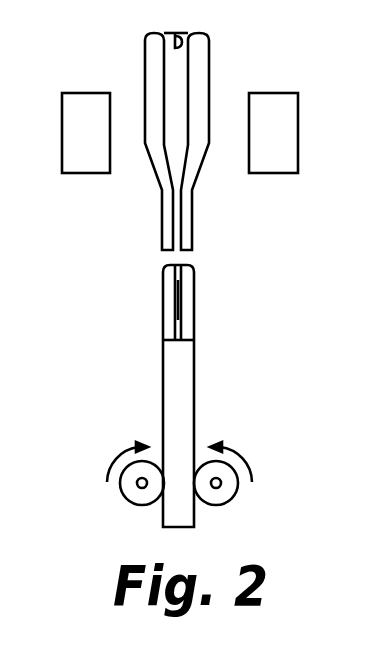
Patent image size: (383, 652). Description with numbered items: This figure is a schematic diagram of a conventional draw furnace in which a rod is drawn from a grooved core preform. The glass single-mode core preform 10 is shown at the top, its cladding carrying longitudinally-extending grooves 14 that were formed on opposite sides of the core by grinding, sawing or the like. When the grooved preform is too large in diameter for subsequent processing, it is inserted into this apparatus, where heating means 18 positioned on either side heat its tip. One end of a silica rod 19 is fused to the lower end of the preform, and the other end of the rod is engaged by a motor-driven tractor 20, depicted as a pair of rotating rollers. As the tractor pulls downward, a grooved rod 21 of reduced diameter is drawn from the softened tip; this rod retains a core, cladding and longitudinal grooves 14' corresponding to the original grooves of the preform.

The glass single-mode core preform 10 is at (212, 30).
The longitudinally-extending grooves 14 is at (144, 24).
The longitudinal grooves 14' is at (222, 300).
The heating means 18 is at (83, 93).
The silica rod 19 is at (186, 381).
The motor-driven tractor 20 is at (128, 502).
The grooved rod 21 is at (163, 291).